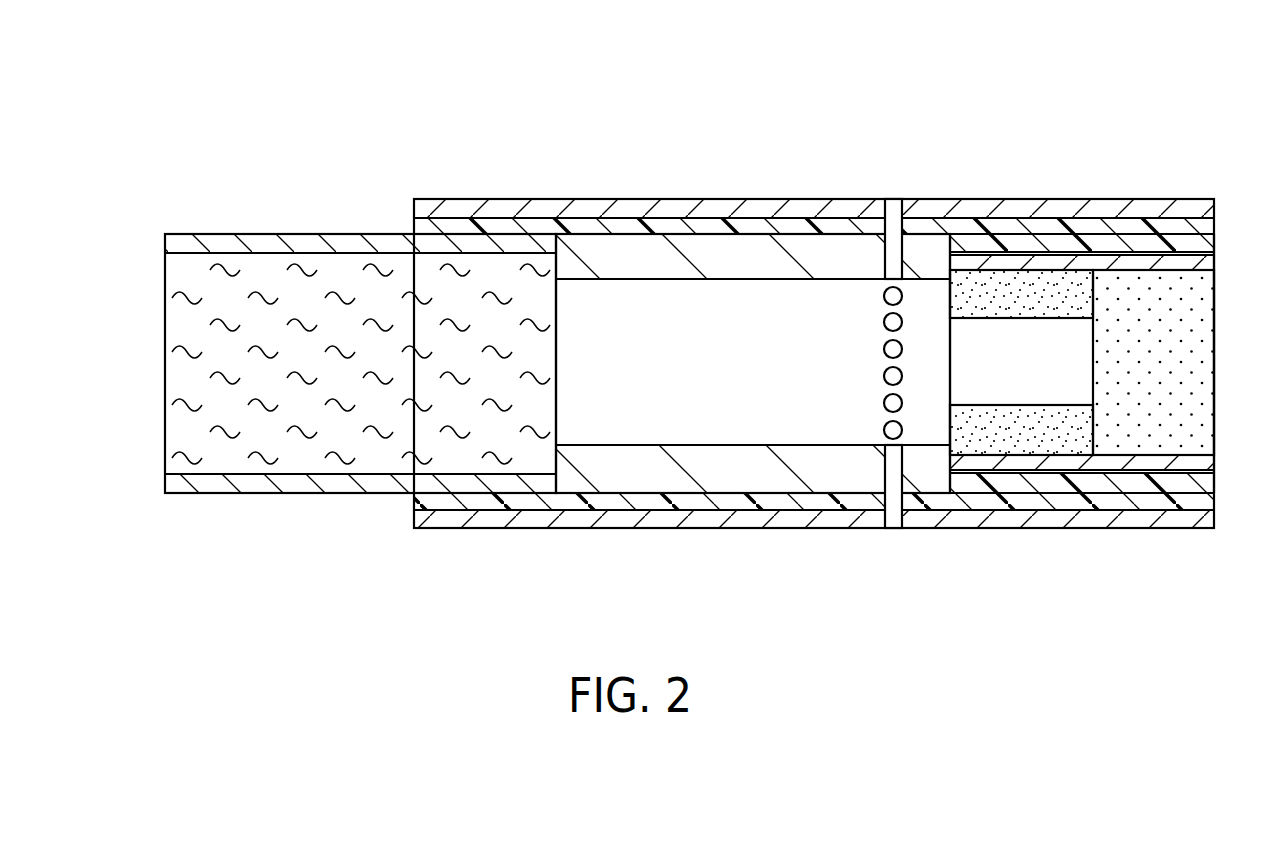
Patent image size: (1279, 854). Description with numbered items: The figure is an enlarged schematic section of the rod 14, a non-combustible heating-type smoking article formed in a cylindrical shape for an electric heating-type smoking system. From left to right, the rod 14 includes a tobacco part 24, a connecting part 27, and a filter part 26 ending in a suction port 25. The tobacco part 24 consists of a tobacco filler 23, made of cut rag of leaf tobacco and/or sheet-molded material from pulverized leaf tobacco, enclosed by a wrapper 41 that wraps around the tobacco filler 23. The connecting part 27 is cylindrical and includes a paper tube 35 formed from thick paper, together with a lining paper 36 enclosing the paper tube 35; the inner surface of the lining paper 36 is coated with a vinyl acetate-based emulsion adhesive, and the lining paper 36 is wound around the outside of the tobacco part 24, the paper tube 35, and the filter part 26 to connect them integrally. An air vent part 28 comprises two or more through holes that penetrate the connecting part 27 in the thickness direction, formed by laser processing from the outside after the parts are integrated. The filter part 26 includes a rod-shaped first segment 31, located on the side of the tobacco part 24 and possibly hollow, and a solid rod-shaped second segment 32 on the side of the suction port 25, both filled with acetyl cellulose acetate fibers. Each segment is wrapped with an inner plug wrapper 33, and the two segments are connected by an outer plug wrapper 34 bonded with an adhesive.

The rod 14 is at (743, 128).
The tobacco filler 23 is at (333, 280).
The tobacco part 24 is at (274, 226).
The suction port 25 is at (1215, 350).
The filter part 26 is at (1215, 528).
The connecting part 27 is at (839, 190).
The air vent part 28 is at (893, 207).
The first segment 31 is at (1022, 262).
The second segment 32 is at (1175, 268).
The inner plug wrapper 33 is at (1036, 462).
The outer plug wrapper 34 is at (1097, 482).
The paper tube 35 is at (676, 258).
The lining paper 36 is at (596, 205).
The wrapper 41 is at (382, 234).